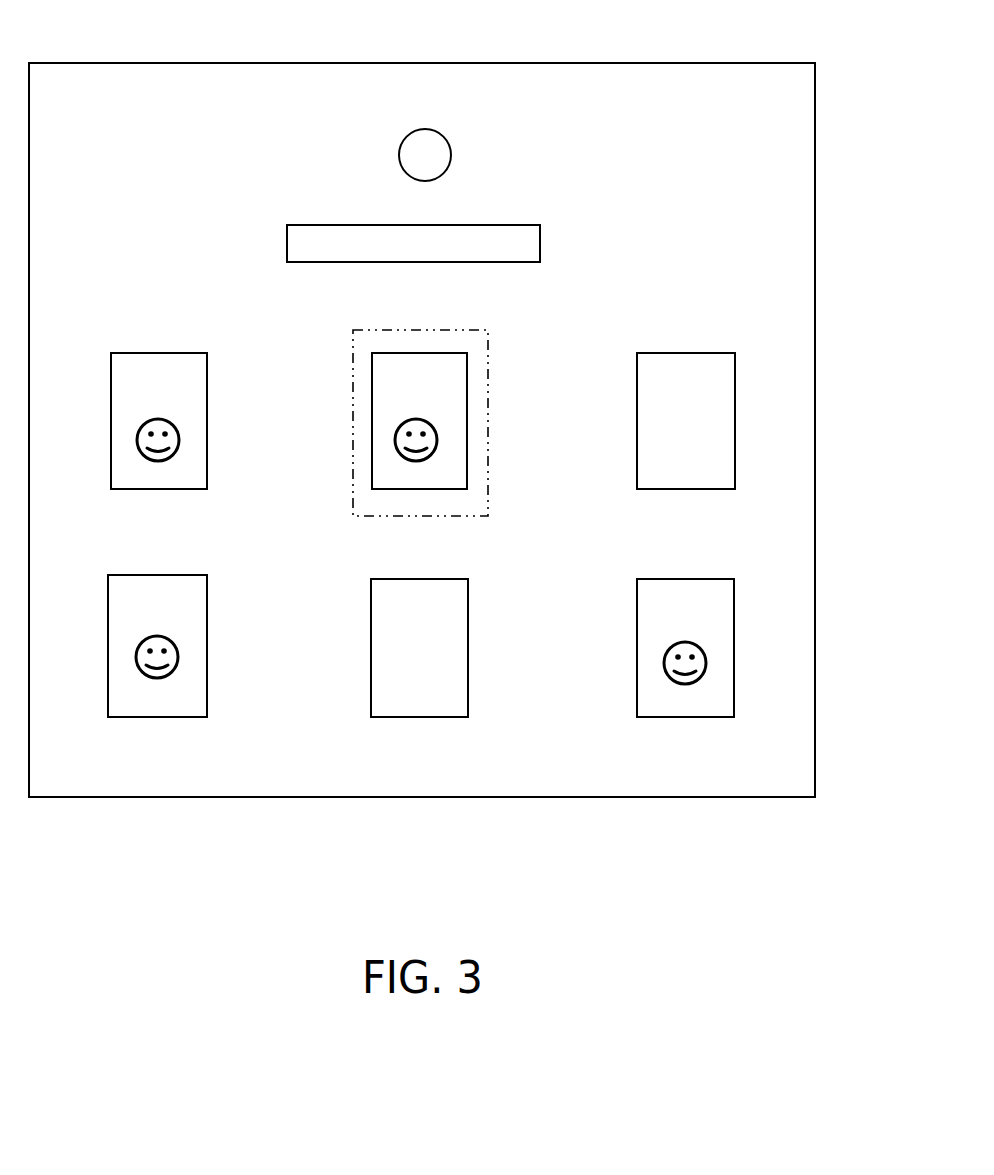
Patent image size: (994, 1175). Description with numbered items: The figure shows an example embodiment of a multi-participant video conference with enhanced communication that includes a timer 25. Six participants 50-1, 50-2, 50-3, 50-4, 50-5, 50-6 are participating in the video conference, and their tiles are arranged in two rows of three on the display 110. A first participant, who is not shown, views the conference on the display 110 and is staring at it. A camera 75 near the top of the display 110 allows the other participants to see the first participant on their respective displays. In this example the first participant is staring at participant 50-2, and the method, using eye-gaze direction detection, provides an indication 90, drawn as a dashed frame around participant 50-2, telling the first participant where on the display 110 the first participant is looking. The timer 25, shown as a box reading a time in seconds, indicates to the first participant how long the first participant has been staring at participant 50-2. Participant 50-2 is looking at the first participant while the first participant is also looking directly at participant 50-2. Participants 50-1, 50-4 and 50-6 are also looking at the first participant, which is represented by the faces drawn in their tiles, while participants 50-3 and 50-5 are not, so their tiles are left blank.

The display 110 is at (413, 52).
The camera 75 is at (412, 157).
The timer 25 is at (274, 244).
The indication 90 is at (412, 326).
The participant 50-1 is at (159, 421).
The participant 50-2 is at (419, 421).
The participant 50-3 is at (686, 421).
The participant 50-4 is at (157, 646).
The participant 50-5 is at (419, 648).
The participant 50-6 is at (685, 648).